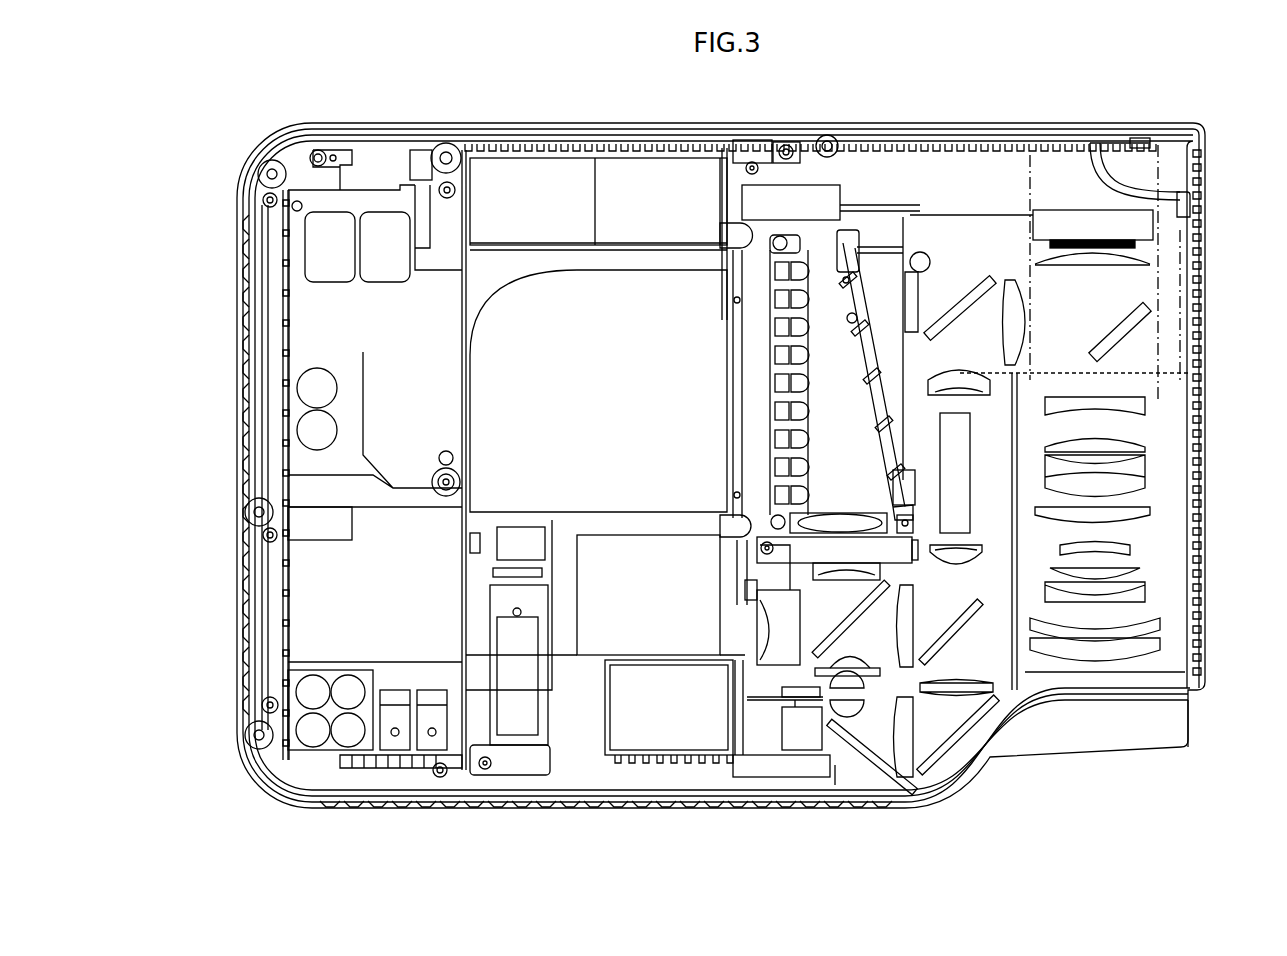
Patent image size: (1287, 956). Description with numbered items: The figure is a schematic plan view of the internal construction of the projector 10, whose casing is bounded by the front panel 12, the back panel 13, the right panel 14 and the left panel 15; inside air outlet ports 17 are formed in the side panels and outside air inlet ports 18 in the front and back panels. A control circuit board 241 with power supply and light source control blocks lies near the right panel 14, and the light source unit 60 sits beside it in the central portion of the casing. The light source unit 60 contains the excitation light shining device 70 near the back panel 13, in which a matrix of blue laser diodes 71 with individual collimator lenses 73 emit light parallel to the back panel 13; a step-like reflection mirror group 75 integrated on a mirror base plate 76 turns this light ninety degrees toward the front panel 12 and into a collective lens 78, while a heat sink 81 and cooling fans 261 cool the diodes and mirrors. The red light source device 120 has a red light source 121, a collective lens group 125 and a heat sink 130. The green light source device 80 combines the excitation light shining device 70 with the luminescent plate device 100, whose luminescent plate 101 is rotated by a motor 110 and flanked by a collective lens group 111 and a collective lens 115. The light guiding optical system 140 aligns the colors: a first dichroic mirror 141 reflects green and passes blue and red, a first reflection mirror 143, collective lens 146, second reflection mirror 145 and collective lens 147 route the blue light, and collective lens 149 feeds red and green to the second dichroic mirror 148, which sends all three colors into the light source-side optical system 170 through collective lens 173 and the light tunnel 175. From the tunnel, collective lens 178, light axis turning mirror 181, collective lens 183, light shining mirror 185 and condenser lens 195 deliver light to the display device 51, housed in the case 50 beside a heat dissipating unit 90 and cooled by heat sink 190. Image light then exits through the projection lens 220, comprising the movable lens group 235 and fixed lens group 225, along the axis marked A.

The projector 10 is at (1212, 118).
The front panel 12 is at (388, 795).
The back panel 13 is at (585, 140).
The right panel 14 is at (262, 333).
The left panel 15 is at (1200, 622).
The inside air outlet ports 17 is at (243, 375).
The outside air inlet ports 18 is at (543, 130).
The case 50 is at (1180, 258).
The display device 51 is at (1130, 245).
The light source unit 60 is at (462, 435).
The excitation light shining device 70 is at (760, 272).
The blue laser diodes 71 is at (800, 365).
The collimator lenses 73 is at (800, 333).
The reflection mirror group 75 is at (850, 398).
The mirror base plate 76 is at (838, 305).
The collective lens 78 is at (836, 520).
The green light source device 80 is at (839, 465).
The heat sink 81 is at (633, 350).
The heat dissipating unit 90 is at (1005, 285).
The luminescent plate device 100 is at (795, 748).
The luminescent plate 101 is at (770, 700).
The motor 110 is at (800, 735).
The collective lens group 111 is at (935, 700).
The collective lens 115 is at (905, 655).
The red light source device 120 is at (722, 655).
The red light source 121 is at (712, 625).
The collective lens group 125 is at (745, 600).
The heat sink 130 is at (612, 605).
The light guiding optical system 140 is at (997, 720).
The first dichroic mirror 141 is at (843, 633).
The first reflection mirror 143 is at (870, 770).
The second reflection mirror 145 is at (993, 755).
The collective lens 146 is at (905, 745).
The collective lens 147 is at (948, 688).
The second dichroic mirror 148 is at (953, 627).
The collective lens 149 is at (977, 713).
The light source-side optical system 170 is at (974, 280).
The collective lens 173 is at (957, 562).
The light tunnel 175 is at (957, 528).
The collective lens 178 is at (960, 373).
The light axis turning mirror 181 is at (957, 303).
The collective lens 183 is at (1003, 300).
The light shining mirror 185 is at (1120, 333).
The heat sink 190 is at (1060, 170).
The condenser lens 195 is at (1130, 260).
The projection lens 220 is at (1150, 480).
The fixed lens group 225 is at (1128, 652).
The movable lens group 235 is at (1148, 432).
The control circuit board 241 is at (353, 552).
The cooling fan 261 is at (490, 200).
The optical axis A is at (960, 268).